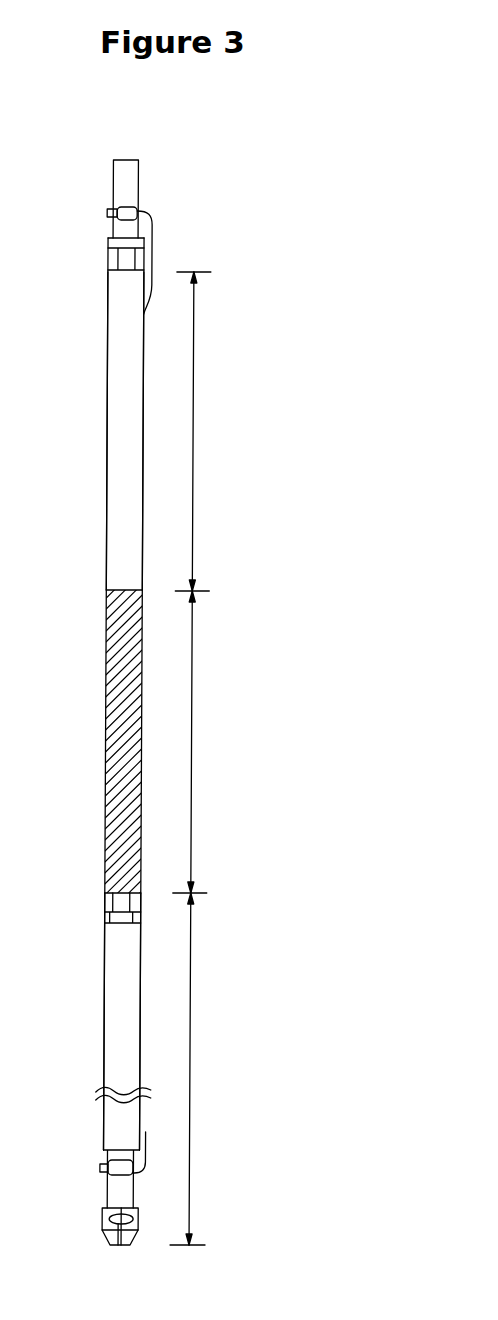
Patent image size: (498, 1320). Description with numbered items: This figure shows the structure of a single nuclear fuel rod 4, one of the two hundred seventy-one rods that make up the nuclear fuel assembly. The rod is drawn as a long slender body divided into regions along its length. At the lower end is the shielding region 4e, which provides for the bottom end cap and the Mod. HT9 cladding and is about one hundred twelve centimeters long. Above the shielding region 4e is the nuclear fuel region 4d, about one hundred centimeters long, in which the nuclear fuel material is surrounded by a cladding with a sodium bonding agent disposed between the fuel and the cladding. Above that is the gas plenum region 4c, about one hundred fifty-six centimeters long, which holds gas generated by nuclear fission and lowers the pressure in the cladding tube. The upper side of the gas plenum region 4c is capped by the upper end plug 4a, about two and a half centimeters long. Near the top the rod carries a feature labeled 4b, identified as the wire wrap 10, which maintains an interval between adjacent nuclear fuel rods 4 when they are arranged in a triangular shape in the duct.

The nuclear fuel rod 4 is at (289, 178).
The upper end plug 4a is at (133, 174).
The ring / coupling pin 4b is at (216, 255).
The wire wrap 10 is at (140, 211).
The gas plenum region 4c is at (195, 440).
The nuclear fuel region 4d is at (192, 714).
The shielding region 4e is at (190, 1017).